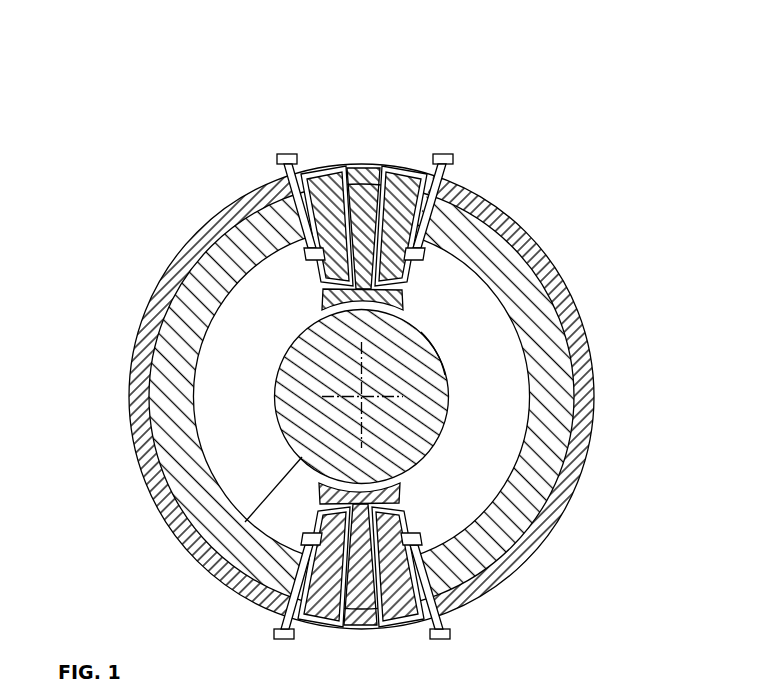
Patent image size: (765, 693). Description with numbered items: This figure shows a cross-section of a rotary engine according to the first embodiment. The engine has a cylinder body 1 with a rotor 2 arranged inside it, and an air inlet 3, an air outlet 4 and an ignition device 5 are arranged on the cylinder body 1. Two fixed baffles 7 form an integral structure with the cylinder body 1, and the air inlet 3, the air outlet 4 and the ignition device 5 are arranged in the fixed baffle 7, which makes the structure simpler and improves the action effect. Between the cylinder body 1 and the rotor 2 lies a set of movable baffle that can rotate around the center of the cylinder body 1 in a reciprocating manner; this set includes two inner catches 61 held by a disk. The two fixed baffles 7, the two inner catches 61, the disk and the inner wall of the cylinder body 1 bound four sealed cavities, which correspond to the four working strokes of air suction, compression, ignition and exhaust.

The cylinder body 1 is at (167, 337).
The rotor 2 is at (300, 340).
The air inlet 3 is at (348, 162).
The air outlet 4 is at (323, 155).
The ignition device 5 is at (277, 150).
The fixed baffle 7 is at (326, 282).
The inner catch 61 is at (421, 332).